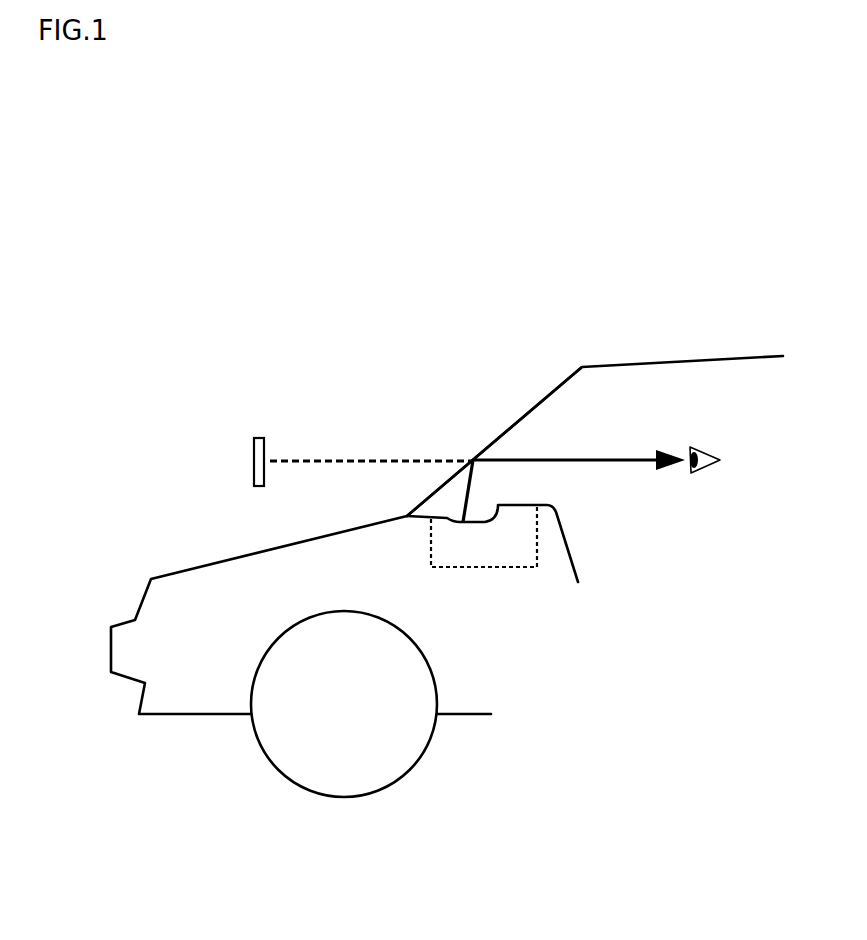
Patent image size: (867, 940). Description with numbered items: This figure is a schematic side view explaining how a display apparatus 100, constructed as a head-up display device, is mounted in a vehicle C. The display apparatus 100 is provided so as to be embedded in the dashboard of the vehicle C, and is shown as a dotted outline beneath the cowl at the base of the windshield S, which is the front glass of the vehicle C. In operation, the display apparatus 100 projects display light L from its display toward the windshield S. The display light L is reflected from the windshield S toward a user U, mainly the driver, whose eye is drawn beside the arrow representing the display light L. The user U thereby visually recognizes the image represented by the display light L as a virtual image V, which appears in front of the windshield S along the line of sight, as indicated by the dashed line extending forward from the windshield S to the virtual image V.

The vehicle C is at (442, 327).
The windshield S is at (547, 395).
The virtual image V is at (254, 455).
The user U is at (719, 446).
The display light L is at (610, 462).
The display apparatus 100 is at (502, 545).